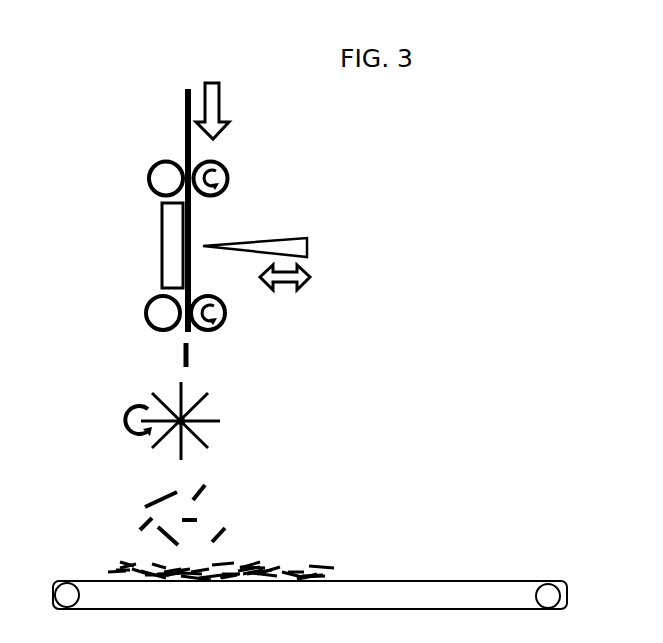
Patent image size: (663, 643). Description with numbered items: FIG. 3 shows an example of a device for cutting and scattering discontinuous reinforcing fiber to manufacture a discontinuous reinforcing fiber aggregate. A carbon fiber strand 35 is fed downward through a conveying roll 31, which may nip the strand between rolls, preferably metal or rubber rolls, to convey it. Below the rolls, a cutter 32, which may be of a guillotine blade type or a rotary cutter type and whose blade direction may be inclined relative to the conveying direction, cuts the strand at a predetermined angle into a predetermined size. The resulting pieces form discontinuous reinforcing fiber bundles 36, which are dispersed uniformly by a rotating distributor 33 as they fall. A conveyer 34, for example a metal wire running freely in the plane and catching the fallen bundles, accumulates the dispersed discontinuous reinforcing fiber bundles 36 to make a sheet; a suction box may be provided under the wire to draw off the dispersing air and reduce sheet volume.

The conveying roll 31 is at (230, 170).
The cutter 32 is at (290, 235).
The distributor 33 is at (217, 392).
The conveyer 34 is at (360, 577).
The carbon fiber strand 35 is at (178, 133).
The discontinuous reinforcing fiber bundle 36 is at (160, 493).